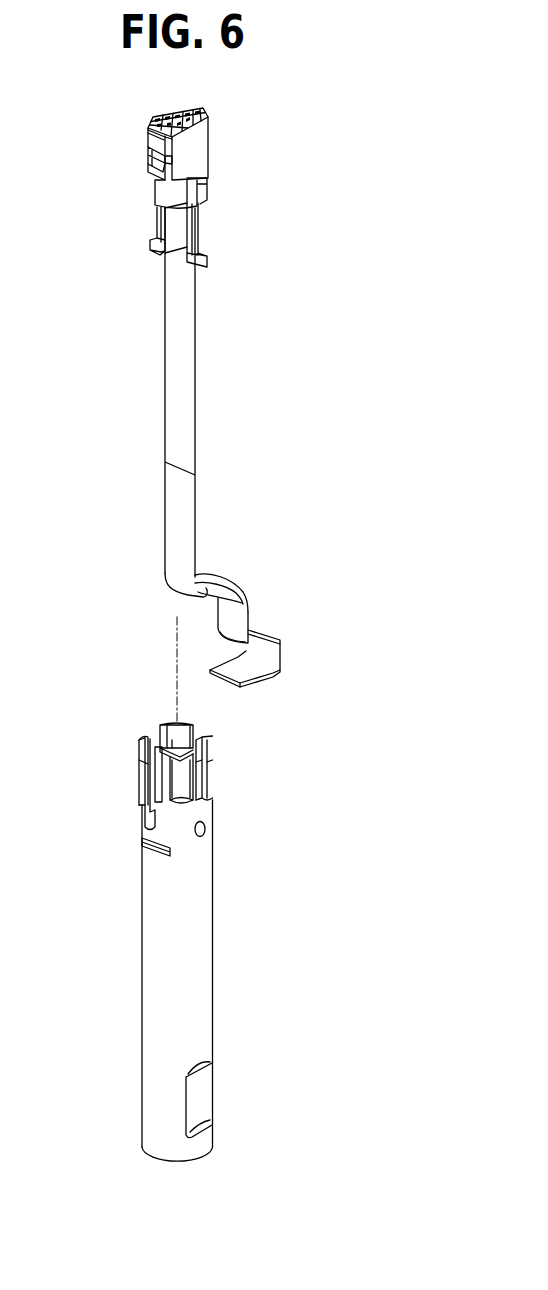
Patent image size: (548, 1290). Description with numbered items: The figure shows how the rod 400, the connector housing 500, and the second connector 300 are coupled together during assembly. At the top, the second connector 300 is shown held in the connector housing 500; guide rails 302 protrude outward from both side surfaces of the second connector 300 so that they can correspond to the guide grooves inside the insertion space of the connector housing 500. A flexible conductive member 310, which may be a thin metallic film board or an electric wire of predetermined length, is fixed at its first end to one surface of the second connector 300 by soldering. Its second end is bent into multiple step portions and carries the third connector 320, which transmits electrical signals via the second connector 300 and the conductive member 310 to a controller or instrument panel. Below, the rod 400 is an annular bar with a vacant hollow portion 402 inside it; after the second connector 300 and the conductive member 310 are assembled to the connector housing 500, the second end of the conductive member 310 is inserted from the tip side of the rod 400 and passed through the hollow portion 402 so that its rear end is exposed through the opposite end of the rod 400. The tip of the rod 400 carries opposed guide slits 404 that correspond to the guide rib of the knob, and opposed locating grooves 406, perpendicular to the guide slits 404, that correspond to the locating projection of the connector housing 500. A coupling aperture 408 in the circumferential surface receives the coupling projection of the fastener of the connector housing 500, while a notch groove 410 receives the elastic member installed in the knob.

The second connector 300 is at (157, 139).
The guide rail 302 is at (147, 164).
The conductive member 310 is at (172, 415).
The third connector 320 is at (251, 672).
The rod 400 is at (205, 945).
The hollow portion 402 is at (177, 741).
The guide slit 404 is at (203, 741).
The locating groove 406 is at (162, 741).
The coupling aperture 408 is at (206, 830).
The notch groove 410 is at (150, 853).
The connector housing 500 is at (207, 150).